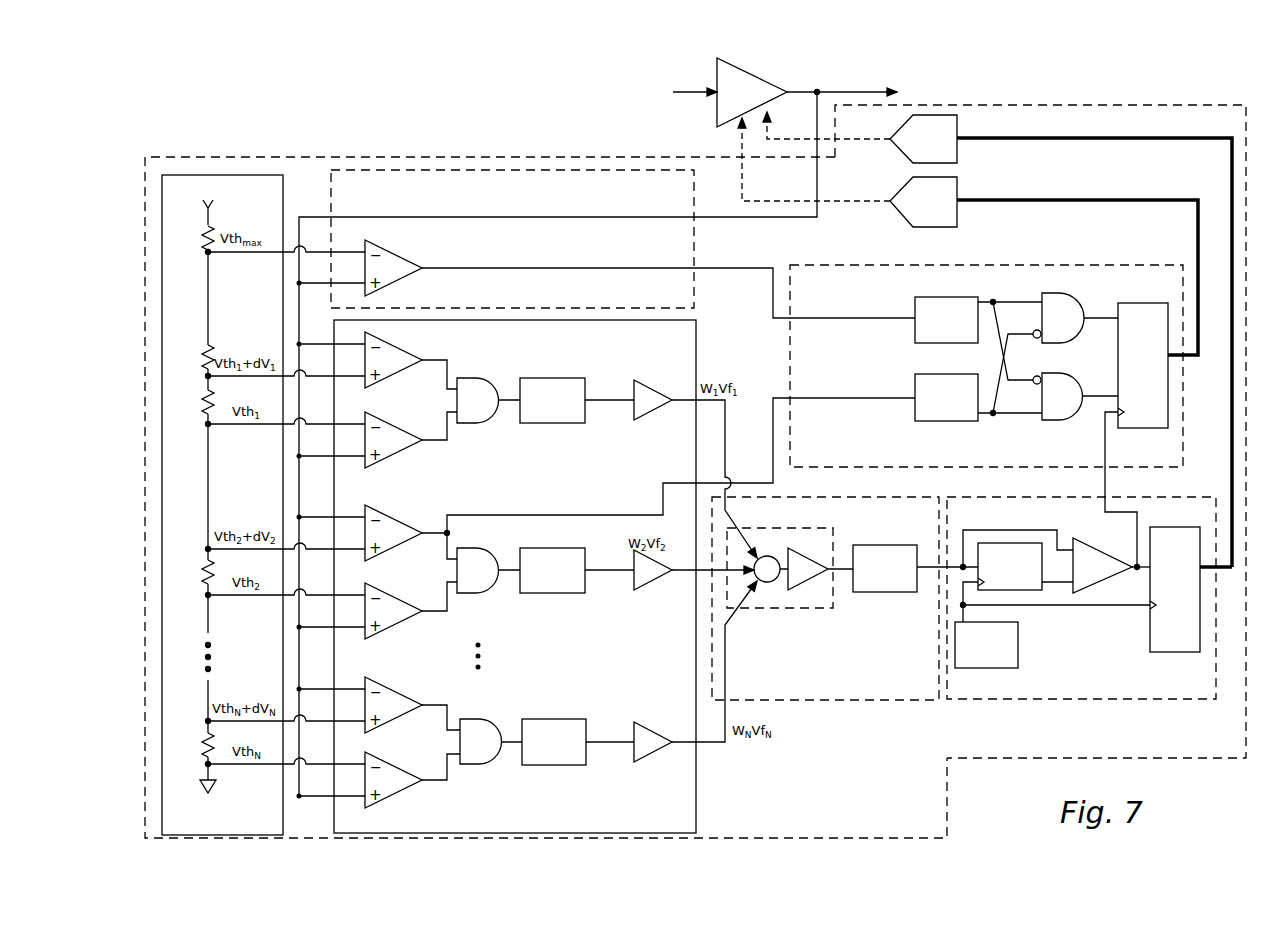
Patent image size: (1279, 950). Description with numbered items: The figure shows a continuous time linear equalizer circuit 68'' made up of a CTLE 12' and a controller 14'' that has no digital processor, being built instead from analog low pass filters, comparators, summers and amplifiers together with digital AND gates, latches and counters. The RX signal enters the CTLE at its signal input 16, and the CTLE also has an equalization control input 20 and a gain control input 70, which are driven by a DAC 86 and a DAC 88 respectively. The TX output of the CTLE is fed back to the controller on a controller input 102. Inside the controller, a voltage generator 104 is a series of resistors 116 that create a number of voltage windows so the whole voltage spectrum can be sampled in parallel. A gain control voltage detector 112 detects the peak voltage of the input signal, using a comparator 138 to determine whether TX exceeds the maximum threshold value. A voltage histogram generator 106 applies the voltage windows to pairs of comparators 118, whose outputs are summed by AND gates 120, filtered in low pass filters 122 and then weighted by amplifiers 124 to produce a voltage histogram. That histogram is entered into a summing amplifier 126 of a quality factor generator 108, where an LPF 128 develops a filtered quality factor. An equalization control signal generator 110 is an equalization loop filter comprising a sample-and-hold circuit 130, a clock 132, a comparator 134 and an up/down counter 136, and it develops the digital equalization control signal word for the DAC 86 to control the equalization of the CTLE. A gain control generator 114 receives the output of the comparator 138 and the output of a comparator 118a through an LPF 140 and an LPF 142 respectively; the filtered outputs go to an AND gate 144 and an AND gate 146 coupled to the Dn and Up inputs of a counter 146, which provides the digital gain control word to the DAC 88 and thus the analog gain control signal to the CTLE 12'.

The continuous time linear equalizer circuit 68'' is at (546, 455).
The controller 14'' is at (1040, 405).
The CTLE 12' is at (807, 89).
The signal input 16 is at (711, 99).
The gain control input 70 is at (738, 120).
The equalization control input 20 is at (770, 108).
The DAC 86 is at (960, 126).
The DAC 88 is at (960, 189).
The controller input 102 is at (540, 218).
The voltage generator 104 is at (277, 783).
The resistors 116 is at (205, 355).
The gain control voltage detector 112 is at (548, 176).
The comparator 138 is at (392, 280).
The voltage histogram generator 106 is at (692, 776).
The comparators 118 is at (400, 385).
The comparator 118a is at (392, 504).
The AND gates 120 is at (470, 416).
The low pass filters 122 is at (530, 383).
The amplifiers 124 is at (645, 383).
The gain control generator 114 is at (1018, 270).
The LPF 140 is at (918, 338).
The LPF 142 is at (918, 416).
The AND gate 144 is at (1058, 305).
The AND gate and counter 146 is at (1058, 380).
The quality factor generator 108 is at (843, 697).
The summing amplifier 126 is at (826, 545).
The LPF 128 is at (870, 548).
The equalization control signal generator 110 is at (990, 697).
The sample-and-hold circuit 130 is at (988, 545).
The comparator 134 is at (1098, 583).
The clock 132 is at (1018, 640).
The up/down counter 136 is at (1152, 640).